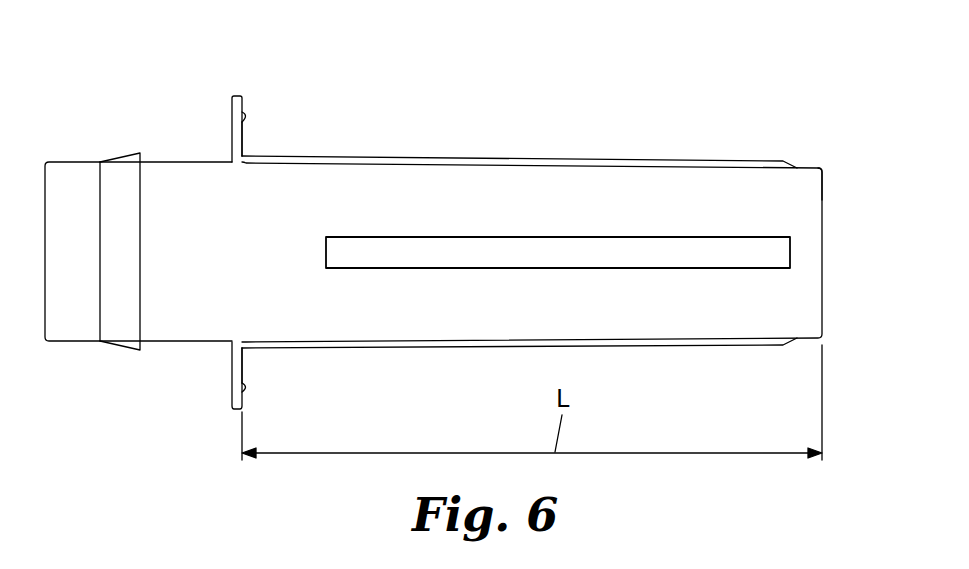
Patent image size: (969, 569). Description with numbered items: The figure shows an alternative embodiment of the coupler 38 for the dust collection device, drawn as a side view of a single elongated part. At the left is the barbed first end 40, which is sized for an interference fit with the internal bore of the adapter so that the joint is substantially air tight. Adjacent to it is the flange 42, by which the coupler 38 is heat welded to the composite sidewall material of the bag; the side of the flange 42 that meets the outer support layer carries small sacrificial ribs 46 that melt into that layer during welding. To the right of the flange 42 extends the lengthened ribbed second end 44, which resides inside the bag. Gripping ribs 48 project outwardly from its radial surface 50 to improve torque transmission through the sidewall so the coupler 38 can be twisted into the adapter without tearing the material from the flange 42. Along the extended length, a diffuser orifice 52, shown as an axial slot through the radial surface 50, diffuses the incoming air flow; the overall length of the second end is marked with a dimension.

The coupler 38 is at (752, 65).
The barbed first end 40 is at (119, 168).
The flange 42 is at (232, 108).
The ribbed second end 44 is at (810, 163).
The sacrificial ribs 46 is at (247, 115).
The gripping ribs 48 is at (372, 160).
The radial surface 50 is at (643, 187).
The diffuser orifice 52 is at (780, 247).